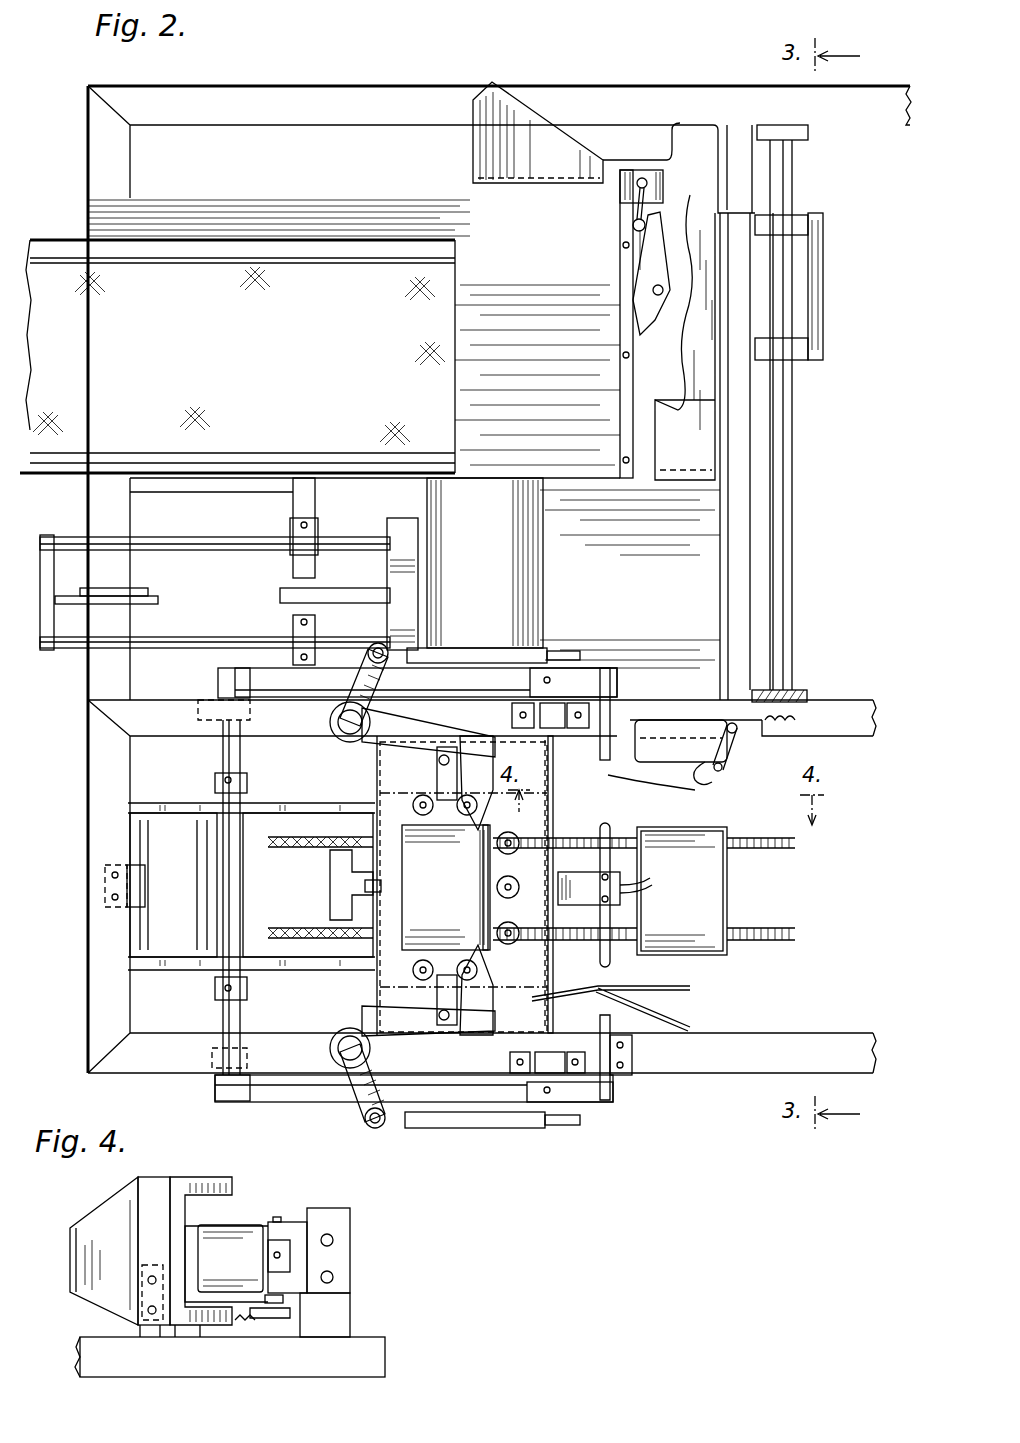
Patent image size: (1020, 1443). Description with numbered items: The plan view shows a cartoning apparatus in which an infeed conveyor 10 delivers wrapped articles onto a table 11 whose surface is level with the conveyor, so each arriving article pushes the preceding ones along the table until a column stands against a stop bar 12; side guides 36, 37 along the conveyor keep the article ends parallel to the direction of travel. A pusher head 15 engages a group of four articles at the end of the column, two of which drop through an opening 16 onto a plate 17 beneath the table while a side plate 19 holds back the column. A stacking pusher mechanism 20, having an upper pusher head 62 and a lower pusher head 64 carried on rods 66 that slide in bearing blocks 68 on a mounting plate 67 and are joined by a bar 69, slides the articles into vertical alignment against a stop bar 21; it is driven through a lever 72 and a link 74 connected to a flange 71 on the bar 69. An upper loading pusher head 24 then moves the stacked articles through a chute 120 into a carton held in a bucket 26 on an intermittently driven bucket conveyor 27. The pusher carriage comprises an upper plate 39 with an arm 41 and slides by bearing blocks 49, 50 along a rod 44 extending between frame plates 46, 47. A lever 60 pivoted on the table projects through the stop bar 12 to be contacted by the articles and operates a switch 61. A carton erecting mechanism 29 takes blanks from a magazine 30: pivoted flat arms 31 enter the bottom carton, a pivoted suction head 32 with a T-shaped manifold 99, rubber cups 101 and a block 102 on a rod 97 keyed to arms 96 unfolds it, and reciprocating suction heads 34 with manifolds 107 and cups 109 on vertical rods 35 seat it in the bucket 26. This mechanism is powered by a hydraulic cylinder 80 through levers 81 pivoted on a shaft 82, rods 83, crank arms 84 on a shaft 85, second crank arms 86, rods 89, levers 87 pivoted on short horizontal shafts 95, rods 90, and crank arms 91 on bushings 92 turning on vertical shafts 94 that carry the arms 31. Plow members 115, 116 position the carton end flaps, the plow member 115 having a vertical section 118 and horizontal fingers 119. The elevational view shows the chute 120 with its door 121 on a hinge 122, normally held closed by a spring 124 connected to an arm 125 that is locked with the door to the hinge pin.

In FIG. 2, the infeed conveyor 10 is at (192, 357).
In FIG. 2, the table 11 is at (487, 330).
In FIG. 2, the stop bar 12 is at (620, 405).
In FIG. 2, the pusher head 15 is at (520, 185).
In FIG. 2, the opening 16 is at (540, 530).
In FIG. 2, the plate 17 is at (470, 530).
In FIG. 2, the side plate 19 is at (478, 152).
In FIG. 2, the stacking pusher mechanism 20 is at (434, 507).
In FIG. 2, the stop bar 21 is at (720, 576).
In FIG. 2, the upper loading pusher head 24 is at (700, 482).
In FIG. 2, the bucket 26 is at (416, 892).
In FIG. 2, the bucket conveyor 27 is at (757, 949).
In FIG. 2, the carton erecting mechanism 29 is at (447, 1132).
In FIG. 2, the magazine 30 is at (380, 767).
In FIG. 2, the pivoted flat arms 31 is at (485, 775).
In FIG. 2, the pivoted suction head 32 is at (500, 860).
In FIG. 2, the reciprocating suction head 34 is at (470, 745).
In FIG. 2, the vertical rods 35 is at (470, 740).
In FIG. 2, the side guide 36 is at (60, 258).
In FIG. 2, the side guide 37 is at (178, 475).
In FIG. 2, the upper plate 39 is at (690, 125).
In FIG. 2, the arm 41 is at (818, 290).
In FIG. 2, the rod 44 is at (773, 560).
In FIG. 2, the frame plate 46 is at (800, 692).
In FIG. 2, the frame plate 47 is at (808, 138).
In FIG. 2, the bearing block 49 is at (800, 355).
In FIG. 2, the bearing block 50 is at (790, 228).
In FIG. 2, the lever 60 is at (620, 345).
In FIG. 2, the switch 61 is at (620, 190).
In FIG. 2, the upper pusher head 62 is at (410, 590).
In FIG. 2, the lower pusher head 64 is at (283, 592).
In FIG. 2, the rods 66 is at (150, 636).
In FIG. 2, the mounting plate 67 is at (293, 510).
In FIG. 2, the bearing blocks 68 is at (310, 540).
In FIG. 2, the bar 69 is at (48, 548).
In FIG. 2, the flange 71 is at (68, 600).
In FIG. 2, the lever 72 is at (145, 605).
In FIG. 2, the link 74 is at (118, 592).
In FIG. 2, the hydraulic cylinder 80 is at (140, 875).
In FIG. 2, the levers 81 is at (175, 803).
In FIG. 2, the shaft 82 is at (215, 888).
In FIG. 2, the rod 83 is at (265, 795).
In FIG. 2, the crank arms 84 is at (258, 730).
In FIG. 2, the shaft 85 is at (230, 905).
In FIG. 2, the second crank arm 86 is at (218, 670).
In FIG. 2, the lever 87 is at (580, 670).
In FIG. 2, the rod 89 is at (278, 668).
In FIG. 2, the rods 90 is at (470, 648).
In FIG. 2, the crank arms 91 is at (370, 698).
In FIG. 2, the bushings 92 is at (330, 722).
In FIG. 2, the vertical shafts 94 is at (365, 735).
In FIG. 2, the short horizontal shafts 95 is at (545, 684).
In FIG. 2, the arms 96 is at (615, 672).
In FIG. 2, the rod 97 is at (605, 760).
In FIG. 2, the T-shaped manifold 99 is at (595, 878).
In FIG. 2, the rubber cups 101 is at (497, 885).
In FIG. 2, the block 102 is at (628, 893).
In FIG. 2, the T-shaped manifold 107 is at (437, 760).
In FIG. 2, the cups 109 is at (425, 815).
In FIG. 2, the plow member 115 is at (600, 784).
In FIG. 4, the plow member 115 is at (101, 1203).
In FIG. 2, the plow member 116 is at (589, 985).
In FIG. 4, the vertical section 118 is at (148, 1205).
In FIG. 4, the horizontal fingers 119 is at (200, 1180).
In FIG. 2, the chute 120 is at (668, 760).
In FIG. 4, the chute 120 is at (185, 1230).
In FIG. 2, the door 121 is at (660, 720).
In FIG. 4, the door 121 is at (216, 1266).
In FIG. 2, the hinge 122 is at (712, 720).
In FIG. 4, the hinge 122 is at (278, 1218).
In FIG. 2, the spring 124 is at (708, 780).
In FIG. 4, the spring 124 is at (255, 1320).
In FIG. 2, the arm 125 is at (728, 760).
In FIG. 4, the arm 125 is at (272, 1320).